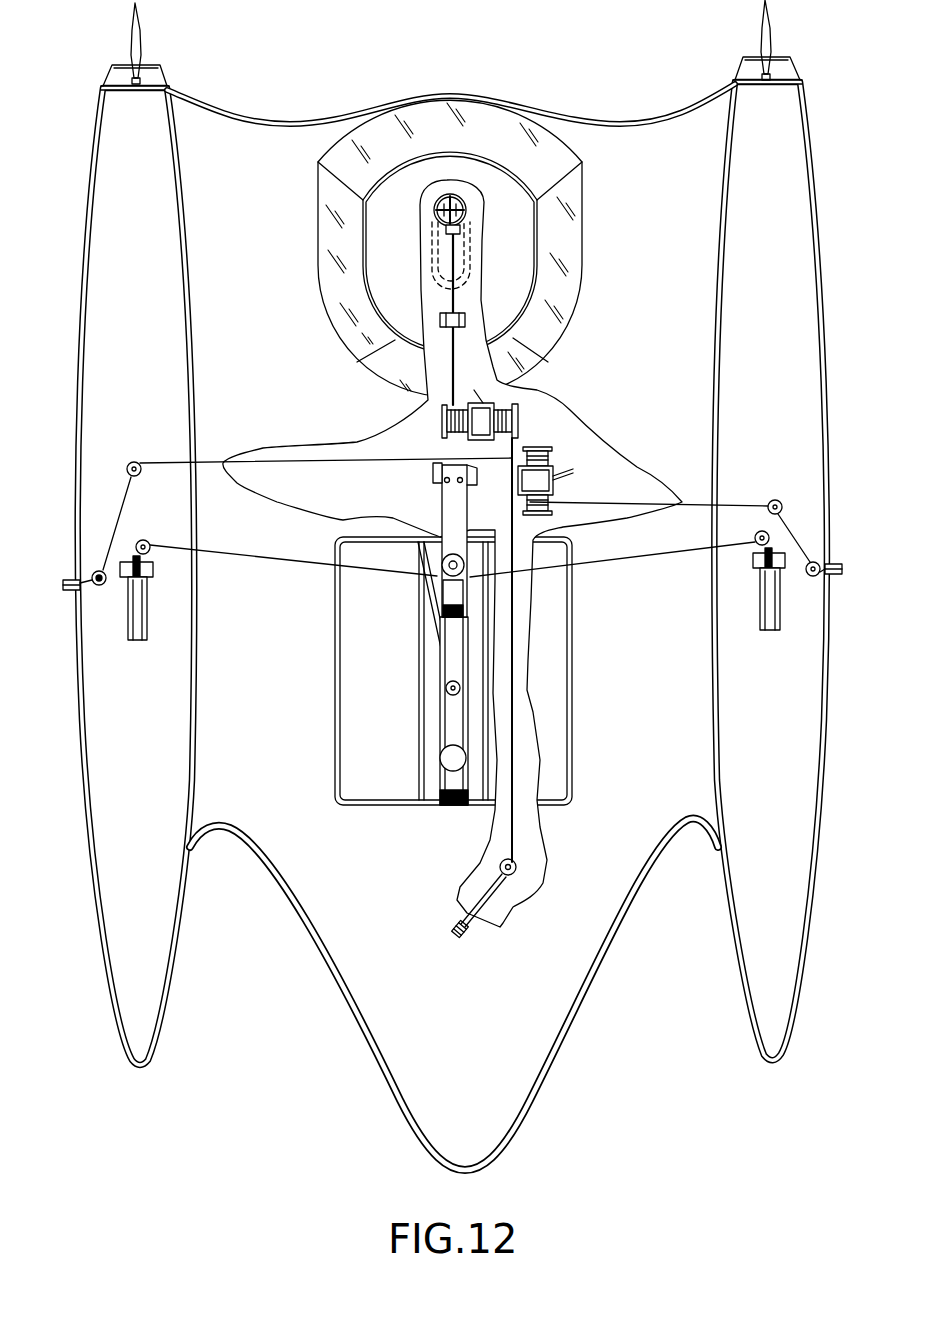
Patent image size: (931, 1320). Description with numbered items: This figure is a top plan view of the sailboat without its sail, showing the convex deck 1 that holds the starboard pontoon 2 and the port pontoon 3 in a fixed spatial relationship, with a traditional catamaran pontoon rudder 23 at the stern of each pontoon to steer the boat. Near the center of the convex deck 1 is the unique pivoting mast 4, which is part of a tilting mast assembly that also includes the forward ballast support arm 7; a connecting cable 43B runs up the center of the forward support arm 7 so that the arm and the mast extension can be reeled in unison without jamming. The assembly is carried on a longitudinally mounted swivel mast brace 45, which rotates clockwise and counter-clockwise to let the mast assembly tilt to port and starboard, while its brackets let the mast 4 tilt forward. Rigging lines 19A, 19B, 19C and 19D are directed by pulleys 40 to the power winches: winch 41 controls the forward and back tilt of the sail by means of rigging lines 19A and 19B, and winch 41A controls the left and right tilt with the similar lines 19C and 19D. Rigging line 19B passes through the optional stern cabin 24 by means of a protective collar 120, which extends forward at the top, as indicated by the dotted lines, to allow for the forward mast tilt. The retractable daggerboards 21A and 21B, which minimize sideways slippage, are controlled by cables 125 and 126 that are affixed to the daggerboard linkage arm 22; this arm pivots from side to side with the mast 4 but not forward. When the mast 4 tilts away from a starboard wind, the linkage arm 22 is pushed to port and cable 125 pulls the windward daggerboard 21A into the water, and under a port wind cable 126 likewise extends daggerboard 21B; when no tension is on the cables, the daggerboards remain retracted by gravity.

The convex deck 1 is at (533, 1117).
The starboard pontoon 2 is at (110, 935).
The port pontoon 3 is at (815, 943).
The pivoting mast 4 is at (457, 548).
The forward ballast support arm 7 is at (448, 758).
The rigging line 19A is at (503, 887).
The rigging line 19B is at (452, 372).
The rigging line 19C is at (738, 500).
The rigging line 19D is at (123, 490).
The retractable daggerboard 21A is at (142, 612).
The retractable daggerboard 21B is at (763, 608).
The daggerboard linkage arm 22 is at (467, 592).
The pontoon rudder 23 is at (131, 32).
The cabin 24 is at (401, 243).
The pulley 40 is at (452, 196).
The power winch 41 is at (519, 414).
The winch 41A is at (533, 459).
The connecting cable 43B is at (455, 718).
The swivel mast brace 45 is at (445, 647).
The protective collar 120 is at (468, 207).
The cable 125 is at (273, 560).
The cable 126 is at (630, 555).